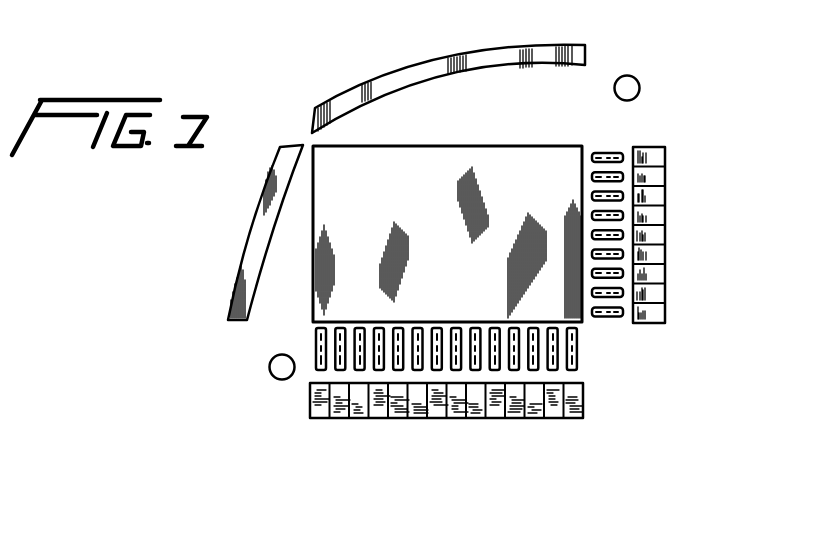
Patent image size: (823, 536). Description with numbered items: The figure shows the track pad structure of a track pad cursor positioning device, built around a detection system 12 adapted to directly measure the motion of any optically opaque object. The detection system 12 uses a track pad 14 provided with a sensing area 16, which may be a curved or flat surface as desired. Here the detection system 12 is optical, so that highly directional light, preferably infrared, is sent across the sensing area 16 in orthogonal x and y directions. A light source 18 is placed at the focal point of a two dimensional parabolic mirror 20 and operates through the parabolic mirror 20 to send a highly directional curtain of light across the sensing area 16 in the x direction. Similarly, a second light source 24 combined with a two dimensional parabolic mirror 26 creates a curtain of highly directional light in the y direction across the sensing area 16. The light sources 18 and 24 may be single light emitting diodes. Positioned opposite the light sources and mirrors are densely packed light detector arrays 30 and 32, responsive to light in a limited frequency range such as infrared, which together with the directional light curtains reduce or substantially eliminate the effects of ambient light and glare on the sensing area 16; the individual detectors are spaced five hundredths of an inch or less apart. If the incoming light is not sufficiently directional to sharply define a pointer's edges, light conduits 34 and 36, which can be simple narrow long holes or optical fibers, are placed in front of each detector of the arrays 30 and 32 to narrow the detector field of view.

The detection system 12 is at (655, 365).
The track pad 14 is at (548, 146).
The sensing area 16 is at (452, 251).
The light source 18 is at (626, 76).
The two dimensional parabolic mirror 20 is at (372, 77).
The second light source 24 is at (271, 378).
The two dimensional parabolic mirror 26 is at (232, 290).
The light detector array 30 is at (451, 418).
The light detector array 32 is at (666, 200).
The light conduit 34 is at (580, 362).
The light conduit 36 is at (593, 157).